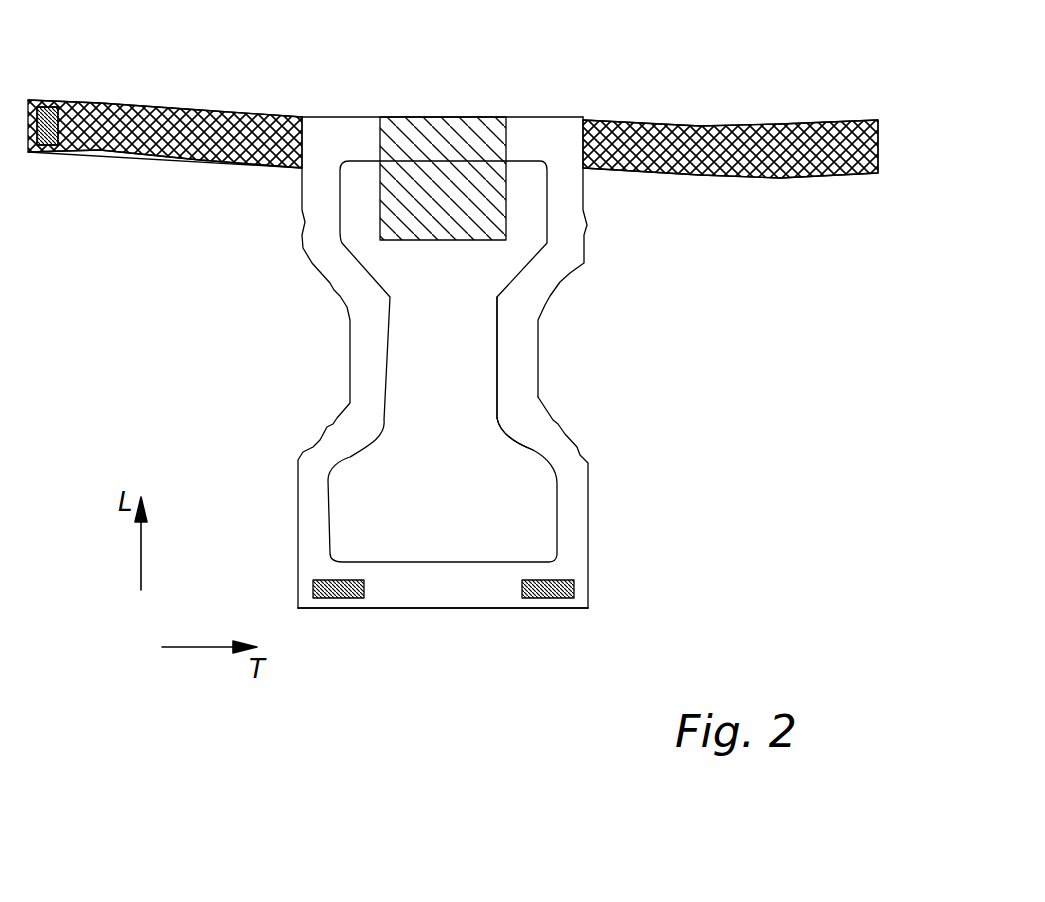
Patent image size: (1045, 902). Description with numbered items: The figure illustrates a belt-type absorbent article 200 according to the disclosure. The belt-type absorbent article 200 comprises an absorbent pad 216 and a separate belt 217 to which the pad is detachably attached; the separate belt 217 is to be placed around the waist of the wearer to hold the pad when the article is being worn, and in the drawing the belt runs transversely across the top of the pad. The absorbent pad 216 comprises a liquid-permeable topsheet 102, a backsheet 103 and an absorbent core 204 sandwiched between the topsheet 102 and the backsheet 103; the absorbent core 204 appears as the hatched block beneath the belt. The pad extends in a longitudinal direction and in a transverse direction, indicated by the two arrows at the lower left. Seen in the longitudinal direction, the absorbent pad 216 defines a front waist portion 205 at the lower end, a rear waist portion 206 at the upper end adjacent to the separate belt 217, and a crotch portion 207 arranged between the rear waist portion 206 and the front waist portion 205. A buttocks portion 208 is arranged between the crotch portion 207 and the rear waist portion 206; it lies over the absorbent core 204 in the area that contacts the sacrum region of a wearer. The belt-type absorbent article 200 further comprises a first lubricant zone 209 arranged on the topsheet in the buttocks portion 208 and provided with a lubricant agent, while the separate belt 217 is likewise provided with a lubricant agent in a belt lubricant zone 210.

The liquid-permeable topsheet 102 is at (522, 357).
The backsheet 103 is at (522, 391).
The belt-type absorbent article 200 is at (692, 410).
The absorbent core 204 is at (405, 293).
The front waist portion 205 is at (397, 588).
The rear waist portion 206 is at (533, 135).
The crotch portion 207 is at (368, 367).
The buttocks portion 208 is at (383, 226).
The first lubricant zone 209 is at (392, 140).
The belt lubricant zone 210 is at (180, 160).
The absorbent pad 216 is at (600, 470).
The separate belt 217 is at (695, 122).